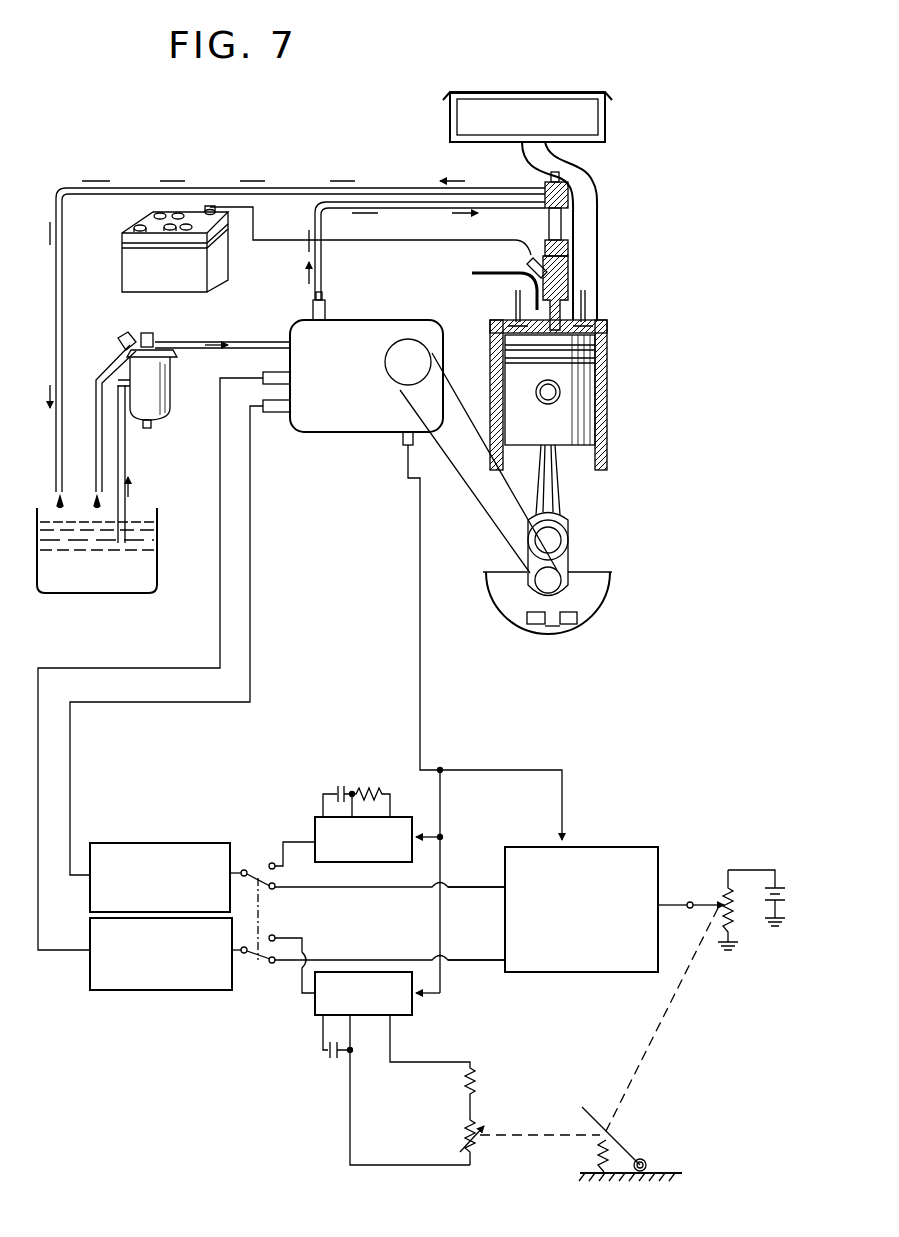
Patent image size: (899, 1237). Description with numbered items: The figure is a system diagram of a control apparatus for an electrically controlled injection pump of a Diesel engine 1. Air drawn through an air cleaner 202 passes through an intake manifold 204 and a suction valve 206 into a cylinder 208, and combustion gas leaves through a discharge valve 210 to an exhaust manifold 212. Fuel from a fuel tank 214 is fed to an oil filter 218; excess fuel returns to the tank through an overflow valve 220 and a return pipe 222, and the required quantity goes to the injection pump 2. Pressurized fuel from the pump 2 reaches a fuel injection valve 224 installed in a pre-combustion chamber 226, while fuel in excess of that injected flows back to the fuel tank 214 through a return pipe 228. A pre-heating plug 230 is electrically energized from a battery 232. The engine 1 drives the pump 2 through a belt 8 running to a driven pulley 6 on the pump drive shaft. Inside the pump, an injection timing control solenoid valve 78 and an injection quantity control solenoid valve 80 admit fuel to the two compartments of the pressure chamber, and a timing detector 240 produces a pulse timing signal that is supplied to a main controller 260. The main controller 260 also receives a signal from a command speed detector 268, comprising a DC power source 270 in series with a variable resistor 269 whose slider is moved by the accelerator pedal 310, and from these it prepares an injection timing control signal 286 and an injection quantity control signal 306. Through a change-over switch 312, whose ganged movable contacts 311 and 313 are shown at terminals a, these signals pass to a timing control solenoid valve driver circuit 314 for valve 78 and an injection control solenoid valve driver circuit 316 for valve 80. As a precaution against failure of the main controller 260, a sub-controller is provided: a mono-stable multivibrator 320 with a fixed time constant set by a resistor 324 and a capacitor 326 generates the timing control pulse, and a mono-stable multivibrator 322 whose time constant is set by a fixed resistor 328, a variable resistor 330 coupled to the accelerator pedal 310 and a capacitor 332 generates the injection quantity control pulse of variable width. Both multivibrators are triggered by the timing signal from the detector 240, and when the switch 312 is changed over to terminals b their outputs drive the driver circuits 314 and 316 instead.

The engine 1 is at (608, 400).
The injection pump 2 is at (292, 320).
The driven pulley 6 is at (420, 360).
The drive transmission 8 is at (478, 523).
The injection timing control solenoid valve 78 is at (265, 403).
The injection control solenoid valve 80 is at (265, 375).
The air cleaner 202 is at (612, 120).
The fuel delivery pipe 204 is at (597, 210).
The suction valve 206 is at (590, 308).
The cylinder 208 is at (608, 360).
The discharge valve 210 is at (508, 318).
The exhaust manifold 212 is at (492, 300).
The fuel tank 214 is at (132, 594).
The oil filter 218 is at (158, 395).
The overflow valve 220 is at (132, 337).
The return pipe 222 is at (108, 360).
The fuel injection valve 224 is at (572, 255).
The pre-combustion chamber 226 is at (530, 273).
The return pipe 228 is at (380, 192).
The pre-heating plug 230 is at (427, 251).
The battery 232 is at (218, 262).
The timing detector 240 is at (405, 450).
The main controller 260 is at (618, 847).
The command speed detector 268 is at (748, 866).
The variable resistor 269 is at (722, 896).
The DC power source 270 is at (760, 915).
The timing control signal line 286 is at (490, 887).
The injection quantity control signal line 306 is at (490, 960).
The accelerator pedal 310 is at (596, 1118).
The changeover switch 311 is at (262, 866).
The change-over switch 312 is at (316, 1005).
The changeover switch 313 is at (252, 966).
The timing control solenoid valve driver circuit 314 is at (168, 843).
The injection control solenoid valve driver circuit 316 is at (152, 992).
The injection timing control pulse signal generator circuit 320 is at (315, 830).
The injection quantity control pulse signal generator circuit 322 is at (318, 1016).
The fixed resistor 324 is at (370, 790).
The capacitor 326 is at (338, 790).
The fixed resistor 328 is at (476, 1080).
The variable resistor 330 is at (468, 1145).
The capacitor 332 is at (333, 1060).